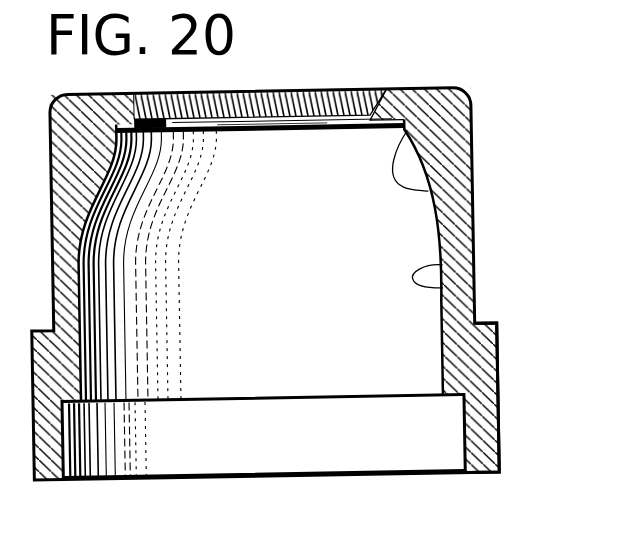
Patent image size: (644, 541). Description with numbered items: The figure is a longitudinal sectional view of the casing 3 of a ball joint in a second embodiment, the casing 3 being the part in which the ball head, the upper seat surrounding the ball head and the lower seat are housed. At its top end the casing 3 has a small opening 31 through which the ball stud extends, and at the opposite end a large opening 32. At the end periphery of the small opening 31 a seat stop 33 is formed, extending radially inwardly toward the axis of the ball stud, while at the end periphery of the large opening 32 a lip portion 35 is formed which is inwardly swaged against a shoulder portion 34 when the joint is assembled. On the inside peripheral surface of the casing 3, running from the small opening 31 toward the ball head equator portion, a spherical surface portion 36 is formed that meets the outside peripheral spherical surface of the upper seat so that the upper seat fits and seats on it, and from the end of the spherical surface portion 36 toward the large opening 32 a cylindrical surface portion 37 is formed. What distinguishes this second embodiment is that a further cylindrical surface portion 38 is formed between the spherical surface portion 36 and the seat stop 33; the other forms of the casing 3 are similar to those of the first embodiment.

The casing 3 is at (484, 102).
The small opening 31 is at (262, 108).
The large opening 32 is at (237, 445).
The seat stop 33 is at (376, 110).
The shoulder portion 34 is at (451, 398).
The lip portion 35 is at (483, 447).
The spherical surface portion 36 is at (430, 194).
The cylindrical surface portion 37 is at (442, 266).
The cylindrical surface portion 38 is at (405, 136).